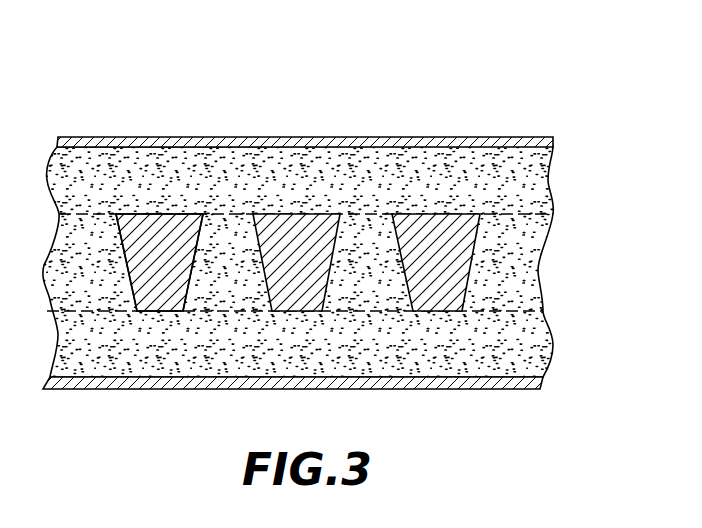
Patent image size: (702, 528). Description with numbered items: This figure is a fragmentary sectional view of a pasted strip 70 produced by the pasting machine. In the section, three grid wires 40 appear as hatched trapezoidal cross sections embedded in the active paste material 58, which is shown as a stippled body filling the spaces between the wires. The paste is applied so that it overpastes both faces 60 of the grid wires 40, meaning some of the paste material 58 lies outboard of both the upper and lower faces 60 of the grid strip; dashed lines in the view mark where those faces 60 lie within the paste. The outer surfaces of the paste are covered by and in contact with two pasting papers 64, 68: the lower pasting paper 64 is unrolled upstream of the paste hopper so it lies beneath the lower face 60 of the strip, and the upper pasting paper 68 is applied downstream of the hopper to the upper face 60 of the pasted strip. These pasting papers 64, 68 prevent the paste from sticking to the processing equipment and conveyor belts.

The grid wires 40 is at (163, 273).
The paste material 58 is at (226, 265).
The faces 60 is at (170, 213).
The pasting paper 64 is at (152, 383).
The pasting paper 68 is at (360, 137).
The pasted strip 70 is at (470, 137).